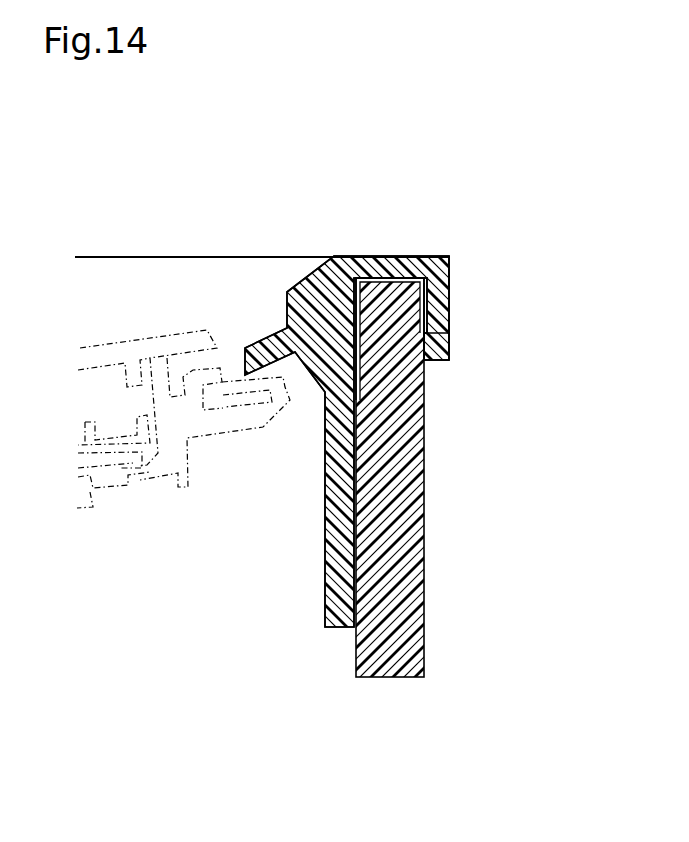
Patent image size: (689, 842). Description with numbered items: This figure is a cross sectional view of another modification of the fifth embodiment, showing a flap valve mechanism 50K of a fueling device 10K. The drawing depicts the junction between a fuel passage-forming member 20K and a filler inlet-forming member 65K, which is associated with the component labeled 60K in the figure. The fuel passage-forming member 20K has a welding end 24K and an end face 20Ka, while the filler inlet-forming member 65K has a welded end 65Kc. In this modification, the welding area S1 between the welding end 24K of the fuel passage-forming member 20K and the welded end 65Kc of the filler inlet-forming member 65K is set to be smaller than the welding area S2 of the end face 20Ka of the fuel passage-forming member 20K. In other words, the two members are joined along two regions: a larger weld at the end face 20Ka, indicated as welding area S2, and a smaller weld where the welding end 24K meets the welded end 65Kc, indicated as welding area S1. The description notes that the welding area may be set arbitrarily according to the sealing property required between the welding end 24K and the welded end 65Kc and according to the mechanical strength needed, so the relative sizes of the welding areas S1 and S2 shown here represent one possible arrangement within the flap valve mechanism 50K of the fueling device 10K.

The flap valve mechanism 50K is at (262, 197).
The fueling device 10K is at (195, 238).
The filler inlet-forming member 65K is at (347, 444).
The holder 60K is at (332, 257).
The welded end 65Kc is at (450, 345).
The welding end 24K is at (450, 340).
The fuel passage-forming member 20K is at (389, 476).
The end face 20Ka is at (348, 278).
The welding area S1 is at (430, 335).
The welding area S2 is at (401, 278).